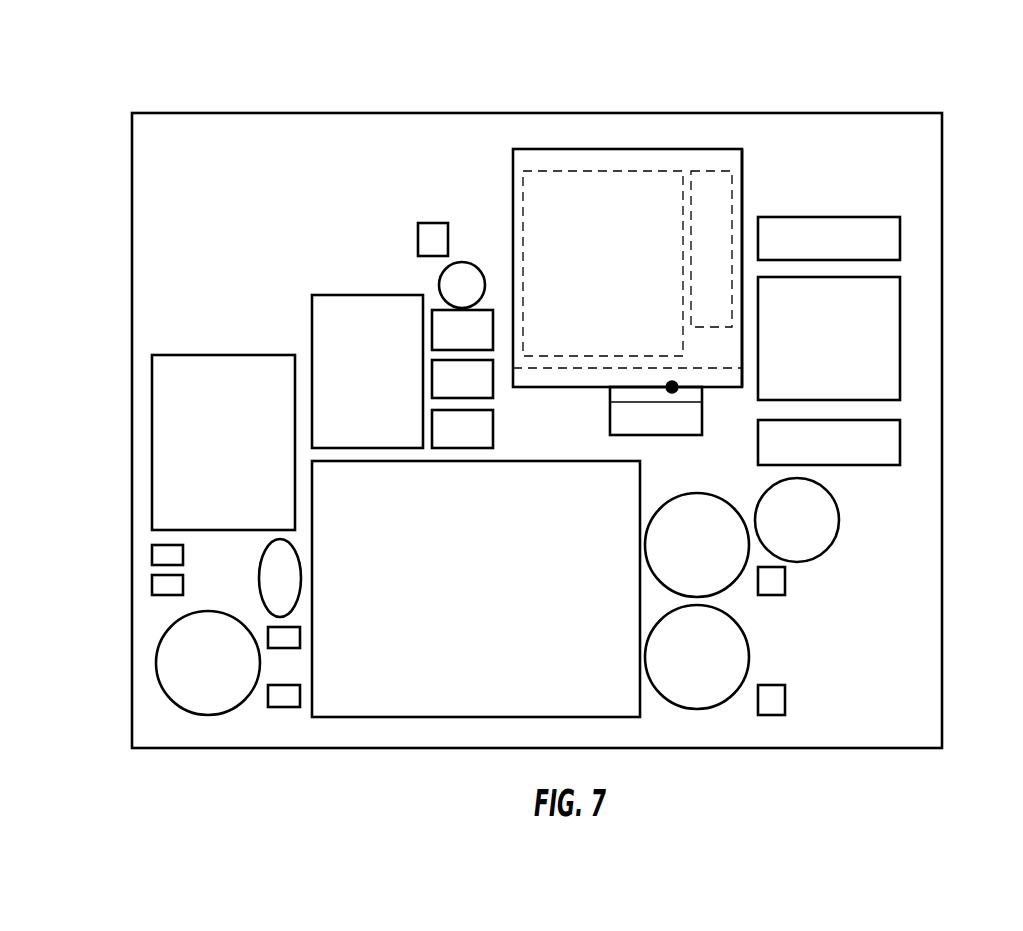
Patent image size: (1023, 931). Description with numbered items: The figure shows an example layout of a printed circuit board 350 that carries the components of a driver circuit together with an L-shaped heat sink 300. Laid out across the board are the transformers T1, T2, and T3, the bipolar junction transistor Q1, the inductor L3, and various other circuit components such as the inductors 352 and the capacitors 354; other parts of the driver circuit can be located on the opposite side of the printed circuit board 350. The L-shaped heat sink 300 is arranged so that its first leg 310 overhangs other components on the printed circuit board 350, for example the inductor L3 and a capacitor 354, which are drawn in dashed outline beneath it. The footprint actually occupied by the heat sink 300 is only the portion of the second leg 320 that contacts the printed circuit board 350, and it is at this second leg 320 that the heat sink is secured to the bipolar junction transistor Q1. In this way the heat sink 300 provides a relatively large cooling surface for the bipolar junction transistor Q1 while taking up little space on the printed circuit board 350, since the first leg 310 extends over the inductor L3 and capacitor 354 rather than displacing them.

The printed circuit board 350 is at (263, 135).
The L-shaped heat sink 300 is at (658, 250).
The first leg 310 is at (743, 175).
The inductor L3 is at (547, 197).
The second leg 320 is at (568, 388).
The capacitors 354 is at (712, 185).
The inductors 352 is at (900, 242).
The bipolar junction transistor Q1 is at (656, 423).
The transformer T1 is at (476, 589).
The transformer T2 is at (367, 371).
The transformer T3 is at (223, 442).